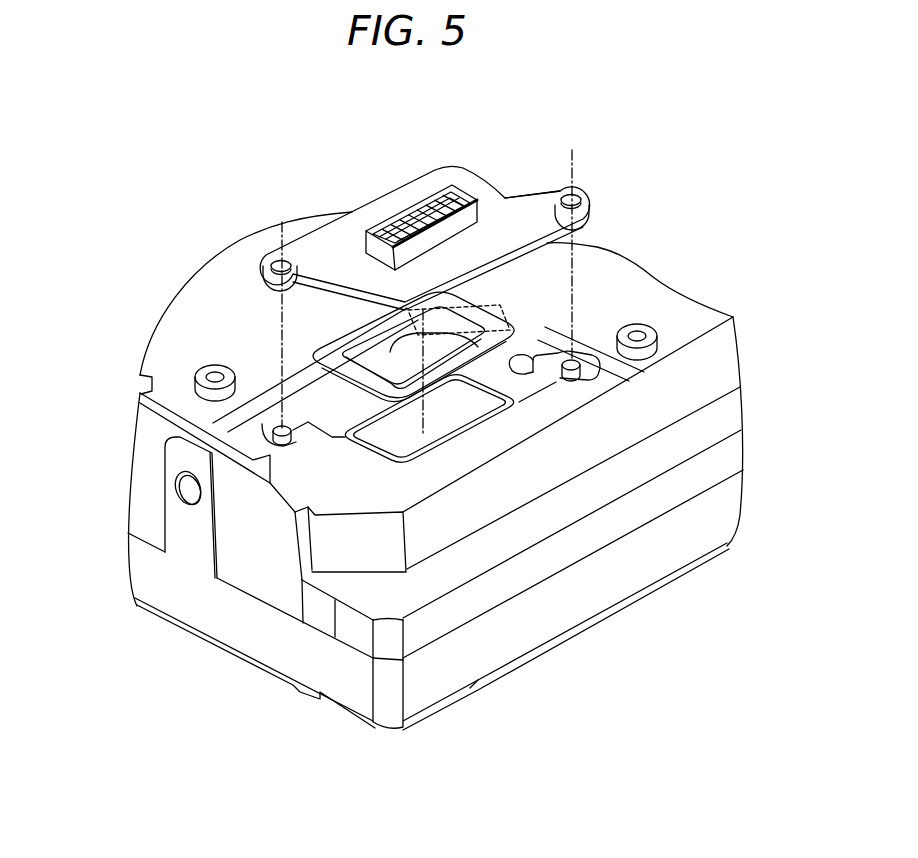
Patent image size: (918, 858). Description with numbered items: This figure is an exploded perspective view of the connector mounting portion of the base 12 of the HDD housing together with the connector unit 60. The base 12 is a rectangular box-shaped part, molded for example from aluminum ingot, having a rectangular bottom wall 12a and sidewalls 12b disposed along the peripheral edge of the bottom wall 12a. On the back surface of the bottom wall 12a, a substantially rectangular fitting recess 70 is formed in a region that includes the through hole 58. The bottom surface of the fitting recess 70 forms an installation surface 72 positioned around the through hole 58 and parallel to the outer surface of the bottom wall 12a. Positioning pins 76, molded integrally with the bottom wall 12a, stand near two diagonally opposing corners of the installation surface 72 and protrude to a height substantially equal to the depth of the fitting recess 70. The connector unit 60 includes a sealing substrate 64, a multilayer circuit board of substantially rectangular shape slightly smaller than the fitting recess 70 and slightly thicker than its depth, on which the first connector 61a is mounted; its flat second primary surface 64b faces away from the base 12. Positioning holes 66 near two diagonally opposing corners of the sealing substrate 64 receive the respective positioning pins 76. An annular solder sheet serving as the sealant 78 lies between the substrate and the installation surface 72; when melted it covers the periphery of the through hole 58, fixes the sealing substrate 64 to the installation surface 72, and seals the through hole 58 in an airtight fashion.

The base 12 is at (137, 339).
The bottom wall 12a is at (208, 297).
The sidewalls 12b is at (245, 555).
The through hole 58 is at (447, 436).
The connector unit 60 is at (383, 157).
The first connector 61a is at (449, 186).
The sealing substrate 64 is at (320, 227).
The second primary surface 64b is at (500, 212).
The positioning holes 66 is at (277, 260).
The fitting recess 70 is at (522, 364).
The installation surface 72 is at (512, 388).
The positioning pins 76 is at (283, 427).
The sealant 78 is at (340, 330).